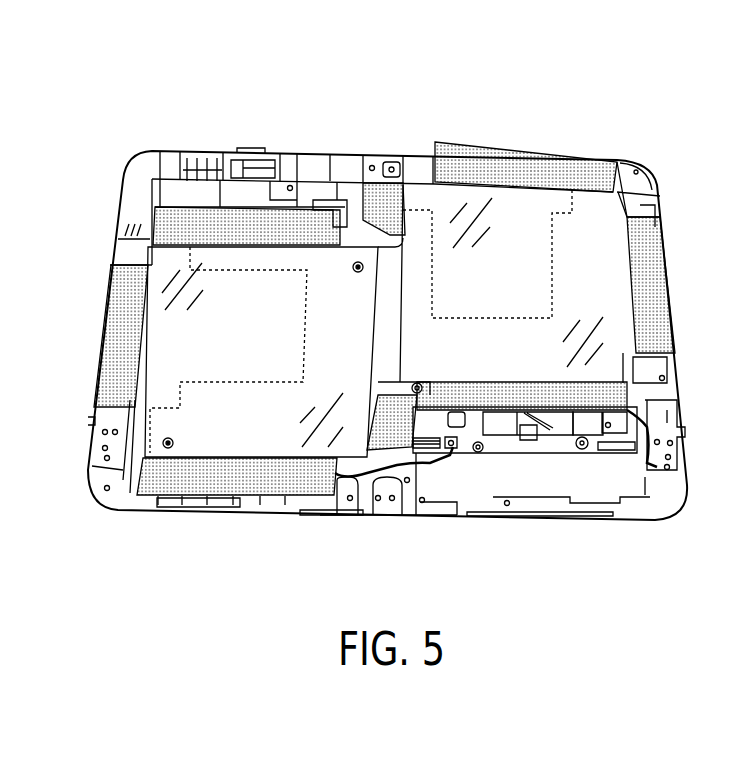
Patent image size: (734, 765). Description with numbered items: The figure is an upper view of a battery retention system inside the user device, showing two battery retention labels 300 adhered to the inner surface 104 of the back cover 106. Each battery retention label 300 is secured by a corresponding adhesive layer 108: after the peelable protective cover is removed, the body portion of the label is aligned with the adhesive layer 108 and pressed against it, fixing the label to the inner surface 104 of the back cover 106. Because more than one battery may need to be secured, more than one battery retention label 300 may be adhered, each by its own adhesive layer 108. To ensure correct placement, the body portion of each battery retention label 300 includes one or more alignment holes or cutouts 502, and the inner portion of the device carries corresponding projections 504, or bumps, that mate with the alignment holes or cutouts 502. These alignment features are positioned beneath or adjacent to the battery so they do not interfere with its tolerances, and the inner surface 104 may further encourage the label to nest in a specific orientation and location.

The battery retention label 300 is at (272, 130).
The inner surface 104 is at (392, 330).
The back cover 106 is at (648, 168).
The adhesive layer 108 is at (640, 198).
The alignment holes or cutouts 502 is at (358, 271).
The projections 504 is at (356, 264).